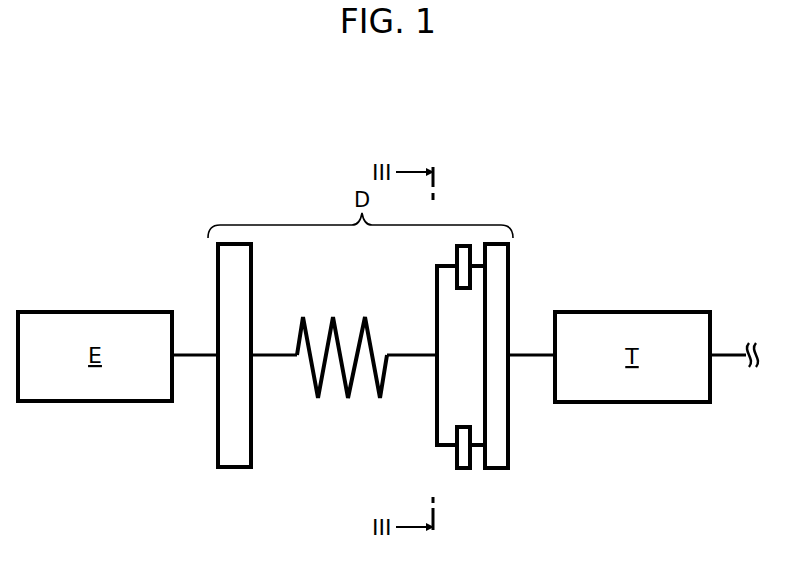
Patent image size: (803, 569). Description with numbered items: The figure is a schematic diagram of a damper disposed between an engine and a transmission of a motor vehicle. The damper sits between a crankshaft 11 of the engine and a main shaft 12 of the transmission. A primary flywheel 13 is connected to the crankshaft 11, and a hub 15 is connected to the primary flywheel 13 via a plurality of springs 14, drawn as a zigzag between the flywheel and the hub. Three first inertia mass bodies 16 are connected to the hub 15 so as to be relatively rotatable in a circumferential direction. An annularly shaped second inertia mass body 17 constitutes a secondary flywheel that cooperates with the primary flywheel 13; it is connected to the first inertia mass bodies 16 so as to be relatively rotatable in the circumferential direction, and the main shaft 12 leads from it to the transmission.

The crankshaft 11 is at (205, 348).
The main shaft 12 is at (515, 352).
The primary flywheel 13 is at (243, 308).
The springs 14 is at (338, 337).
The hub 15 is at (437, 320).
The first inertia mass bodies 16 is at (457, 263).
The second inertia mass body 17 is at (498, 280).